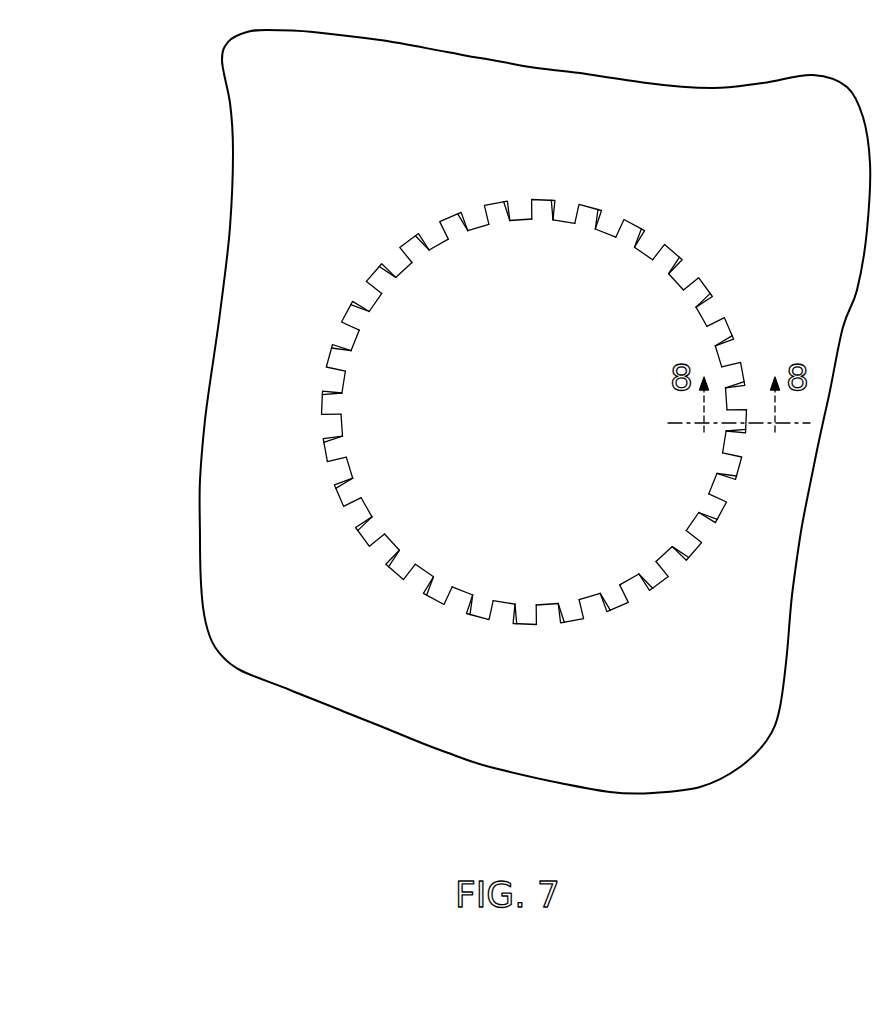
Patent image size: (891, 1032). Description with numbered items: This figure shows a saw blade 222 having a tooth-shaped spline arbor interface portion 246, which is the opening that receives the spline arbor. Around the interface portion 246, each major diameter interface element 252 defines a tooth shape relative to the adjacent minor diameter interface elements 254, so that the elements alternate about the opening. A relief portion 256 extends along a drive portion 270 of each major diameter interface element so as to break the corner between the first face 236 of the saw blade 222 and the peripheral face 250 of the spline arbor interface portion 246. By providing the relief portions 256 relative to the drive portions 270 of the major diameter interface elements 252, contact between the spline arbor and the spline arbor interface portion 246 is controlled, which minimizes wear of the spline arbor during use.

The saw blade 222 is at (232, 228).
The first face 236 is at (300, 613).
The spline arbor interface portion 246 is at (635, 262).
The peripheral face 250 is at (664, 552).
The major diameter interface element 252 is at (643, 217).
The minor diameter interface element 254 is at (600, 242).
The relief portion 256 is at (680, 283).
The drive portion 270 is at (650, 238).